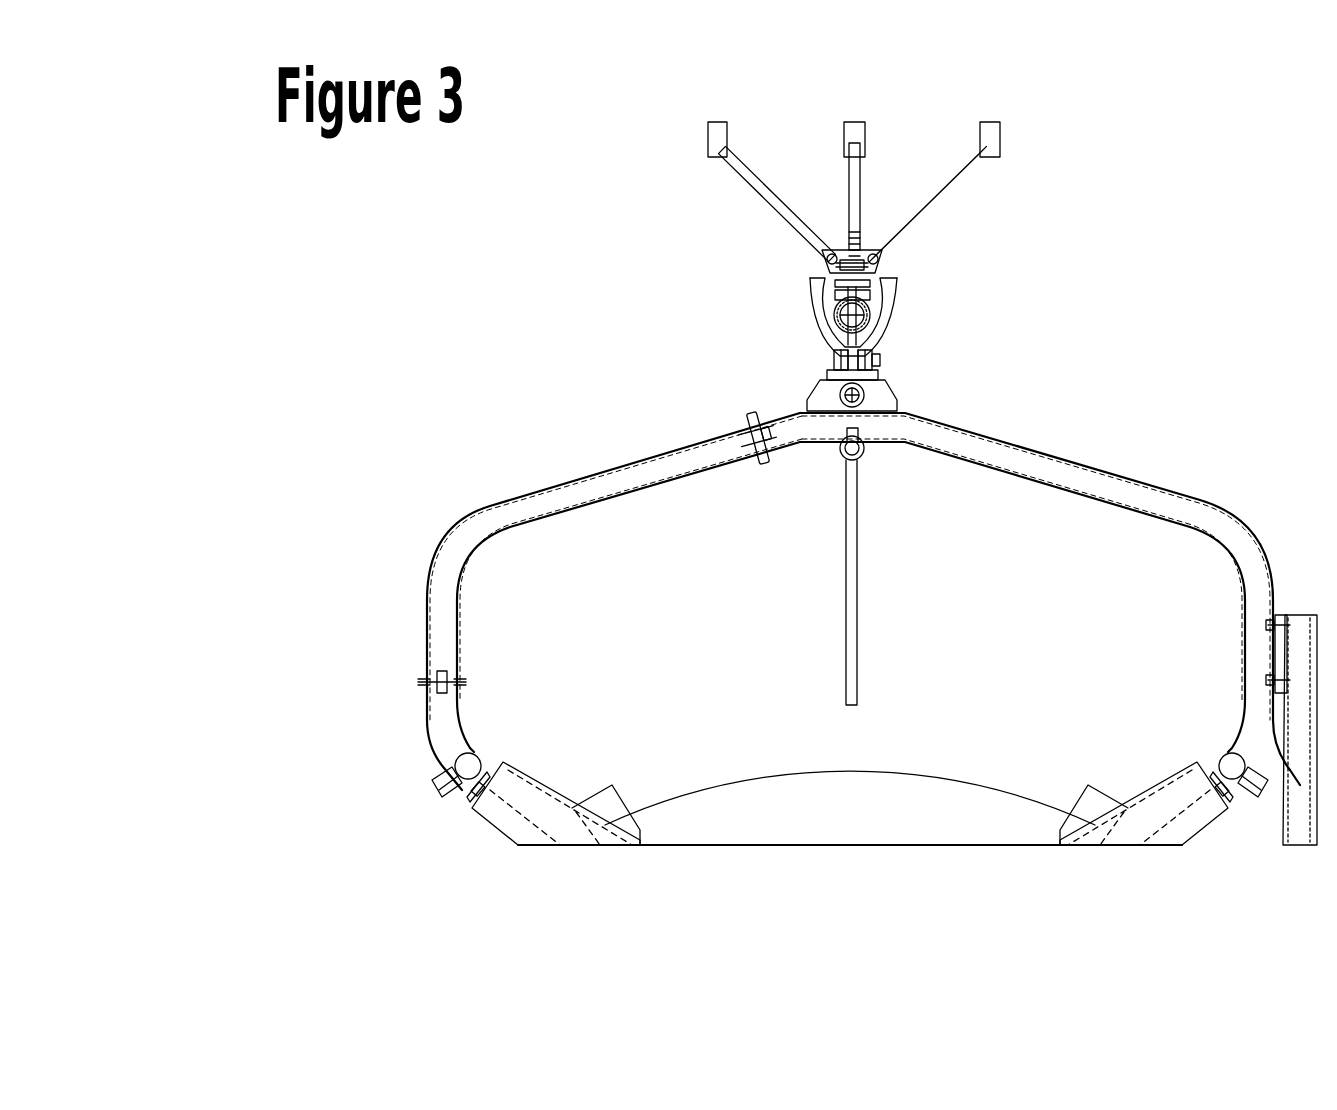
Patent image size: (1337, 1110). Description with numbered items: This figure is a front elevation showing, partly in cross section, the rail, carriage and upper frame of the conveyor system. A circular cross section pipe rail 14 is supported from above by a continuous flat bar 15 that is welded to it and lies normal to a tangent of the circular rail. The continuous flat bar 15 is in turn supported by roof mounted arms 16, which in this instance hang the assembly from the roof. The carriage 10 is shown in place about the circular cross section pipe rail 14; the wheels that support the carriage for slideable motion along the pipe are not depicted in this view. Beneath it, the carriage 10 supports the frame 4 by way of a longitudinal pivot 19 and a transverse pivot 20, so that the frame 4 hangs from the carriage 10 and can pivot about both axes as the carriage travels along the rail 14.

The frame 4 is at (1045, 467).
The carriage 10 is at (888, 285).
The circular cross section pipe rail 14 is at (875, 313).
The continuous flat bar 15 is at (825, 265).
The roof mounted arms 16 is at (992, 138).
The longitudinal pivot 19 is at (827, 385).
The transverse pivot 20 is at (882, 362).